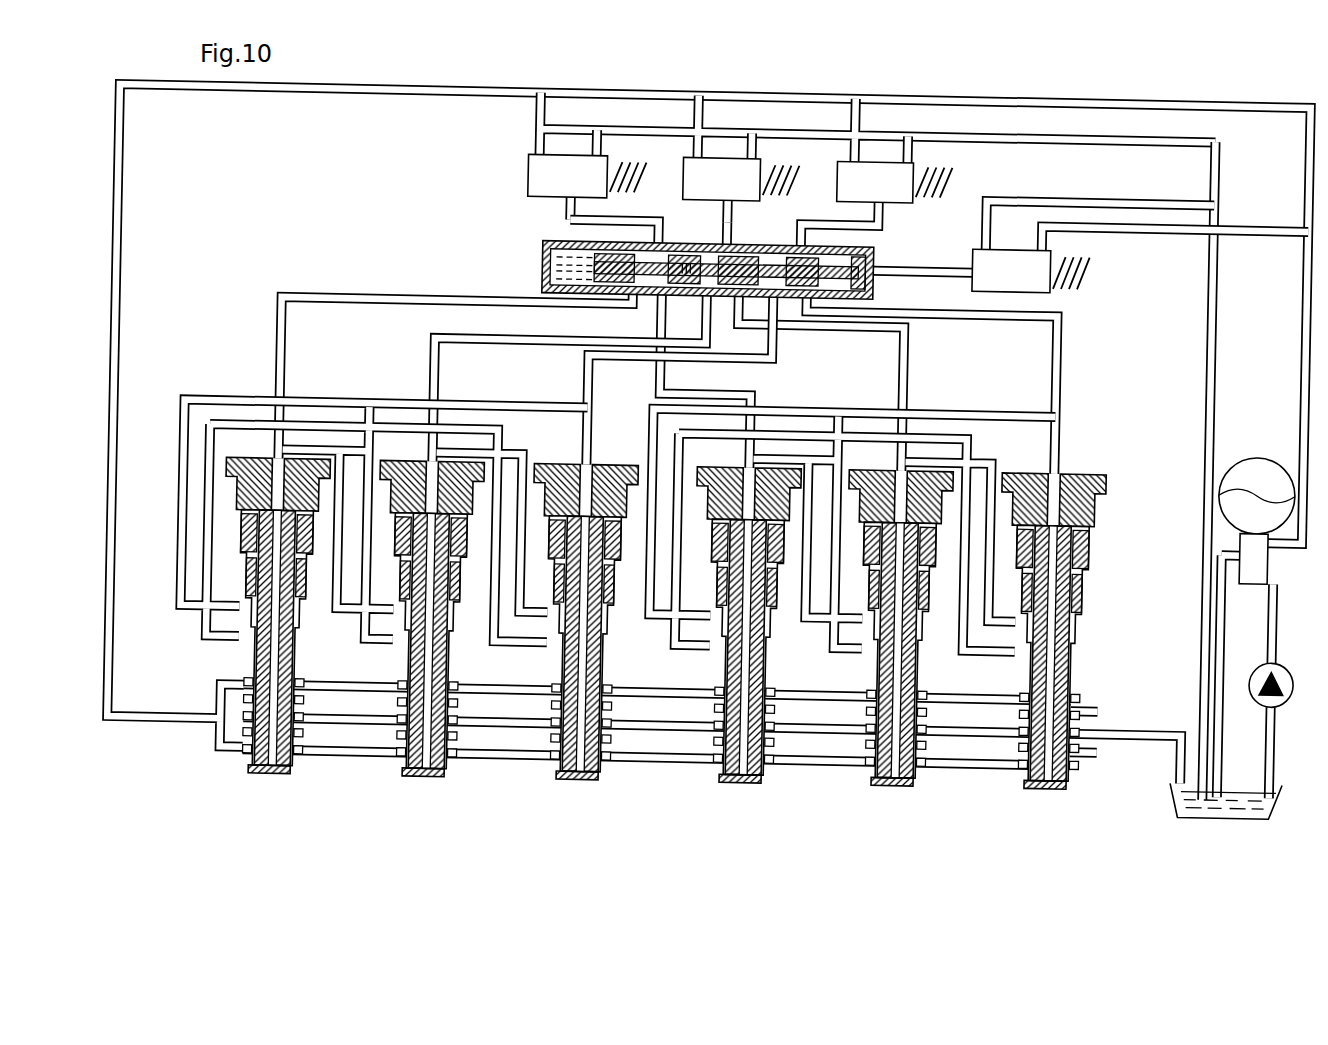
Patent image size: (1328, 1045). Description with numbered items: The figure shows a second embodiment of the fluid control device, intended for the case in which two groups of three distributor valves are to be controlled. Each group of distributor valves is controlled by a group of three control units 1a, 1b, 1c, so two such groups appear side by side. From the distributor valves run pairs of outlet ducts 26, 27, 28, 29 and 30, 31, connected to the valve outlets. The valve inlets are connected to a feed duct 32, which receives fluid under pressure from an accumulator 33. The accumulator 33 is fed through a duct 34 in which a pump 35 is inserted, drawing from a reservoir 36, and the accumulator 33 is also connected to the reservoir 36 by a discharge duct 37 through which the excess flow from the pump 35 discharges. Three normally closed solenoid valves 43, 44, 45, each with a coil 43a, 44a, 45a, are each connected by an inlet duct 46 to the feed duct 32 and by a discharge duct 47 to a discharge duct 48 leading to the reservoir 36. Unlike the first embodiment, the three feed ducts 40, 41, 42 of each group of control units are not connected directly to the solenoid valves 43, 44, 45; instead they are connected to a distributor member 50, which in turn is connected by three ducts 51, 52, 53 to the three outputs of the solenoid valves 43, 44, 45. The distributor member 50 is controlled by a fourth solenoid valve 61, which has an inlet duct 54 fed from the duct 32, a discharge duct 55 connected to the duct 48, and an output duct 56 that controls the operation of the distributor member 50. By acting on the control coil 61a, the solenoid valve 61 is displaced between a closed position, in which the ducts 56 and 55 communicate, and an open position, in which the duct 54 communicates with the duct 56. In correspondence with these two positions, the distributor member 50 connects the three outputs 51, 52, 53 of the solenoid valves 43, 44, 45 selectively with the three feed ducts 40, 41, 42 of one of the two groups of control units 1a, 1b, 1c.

The control unit 1a is at (250, 640).
The control unit 1b is at (402, 642).
The control unit 1c is at (555, 644).
The outlet duct 26 is at (320, 690).
The outlet duct 27 is at (310, 752).
The outlet duct 28 is at (470, 690).
The outlet duct 29 is at (470, 752).
The outlet duct 30 is at (630, 690).
The outlet duct 31 is at (620, 752).
The feed duct 32 is at (150, 710).
The accumulator 33 is at (1249, 520).
The duct 34 is at (1280, 600).
The pump 35 is at (1278, 680).
The reservoir 36 is at (1200, 772).
The discharge duct 37 is at (1228, 650).
The feed duct 40 is at (380, 290).
The feed duct 41 is at (500, 328).
The feed duct 42 is at (610, 342).
The solenoid valve 43 is at (530, 164).
The solenoid valve outlet 43a is at (570, 202).
The solenoid valve 44 is at (690, 162).
The solenoid valve outlet 44a is at (734, 198).
The solenoid valve 45 is at (840, 170).
The solenoid coil 45a is at (950, 170).
The inlet duct 46 is at (537, 118).
The discharge duct 47 is at (601, 124).
The discharge duct 48 is at (1221, 332).
The distributor member 50 is at (546, 257).
The duct 51 is at (665, 216).
The duct 52 is at (727, 224).
The duct 53 is at (870, 210).
The inlet duct 54 is at (1140, 212).
The discharge duct 55 is at (1125, 183).
The output duct 56 is at (940, 254).
The solenoid valve 61 is at (1022, 242).
The control coil 61a is at (1082, 270).